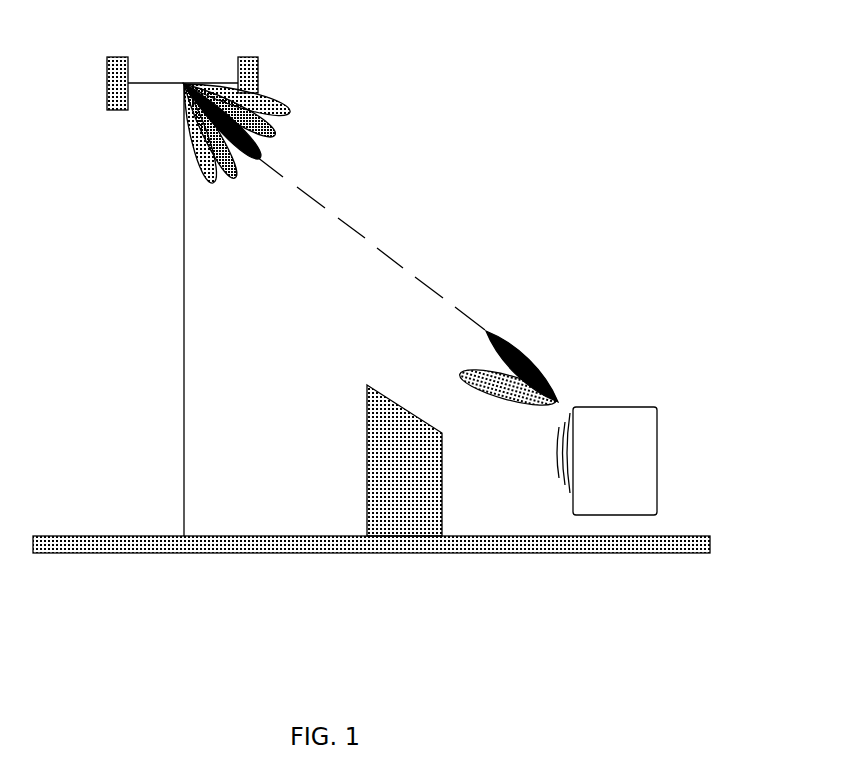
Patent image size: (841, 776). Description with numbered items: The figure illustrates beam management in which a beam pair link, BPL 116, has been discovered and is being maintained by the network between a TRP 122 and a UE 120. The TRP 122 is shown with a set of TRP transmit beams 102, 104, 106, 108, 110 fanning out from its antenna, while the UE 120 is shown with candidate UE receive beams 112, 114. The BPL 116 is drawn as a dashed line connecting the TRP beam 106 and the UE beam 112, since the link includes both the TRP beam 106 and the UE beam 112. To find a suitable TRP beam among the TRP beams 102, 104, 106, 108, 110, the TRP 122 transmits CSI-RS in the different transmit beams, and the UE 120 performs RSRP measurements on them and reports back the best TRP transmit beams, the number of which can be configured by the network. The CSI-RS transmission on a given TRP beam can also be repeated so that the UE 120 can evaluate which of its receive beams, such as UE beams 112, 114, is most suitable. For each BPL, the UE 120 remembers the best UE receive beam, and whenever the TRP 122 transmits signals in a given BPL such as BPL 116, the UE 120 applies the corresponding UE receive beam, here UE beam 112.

The TRP beam 102 is at (280, 103).
The TRP beam 104 is at (273, 137).
The TRP beam 106 is at (258, 158).
The TRP beam 108 is at (238, 158).
The TRP beam 110 is at (203, 163).
The UE beam 112 is at (485, 330).
The UE beam 114 is at (460, 377).
The BPL 116 is at (413, 207).
The UE 120 is at (638, 376).
The TRP 122 is at (184, 83).